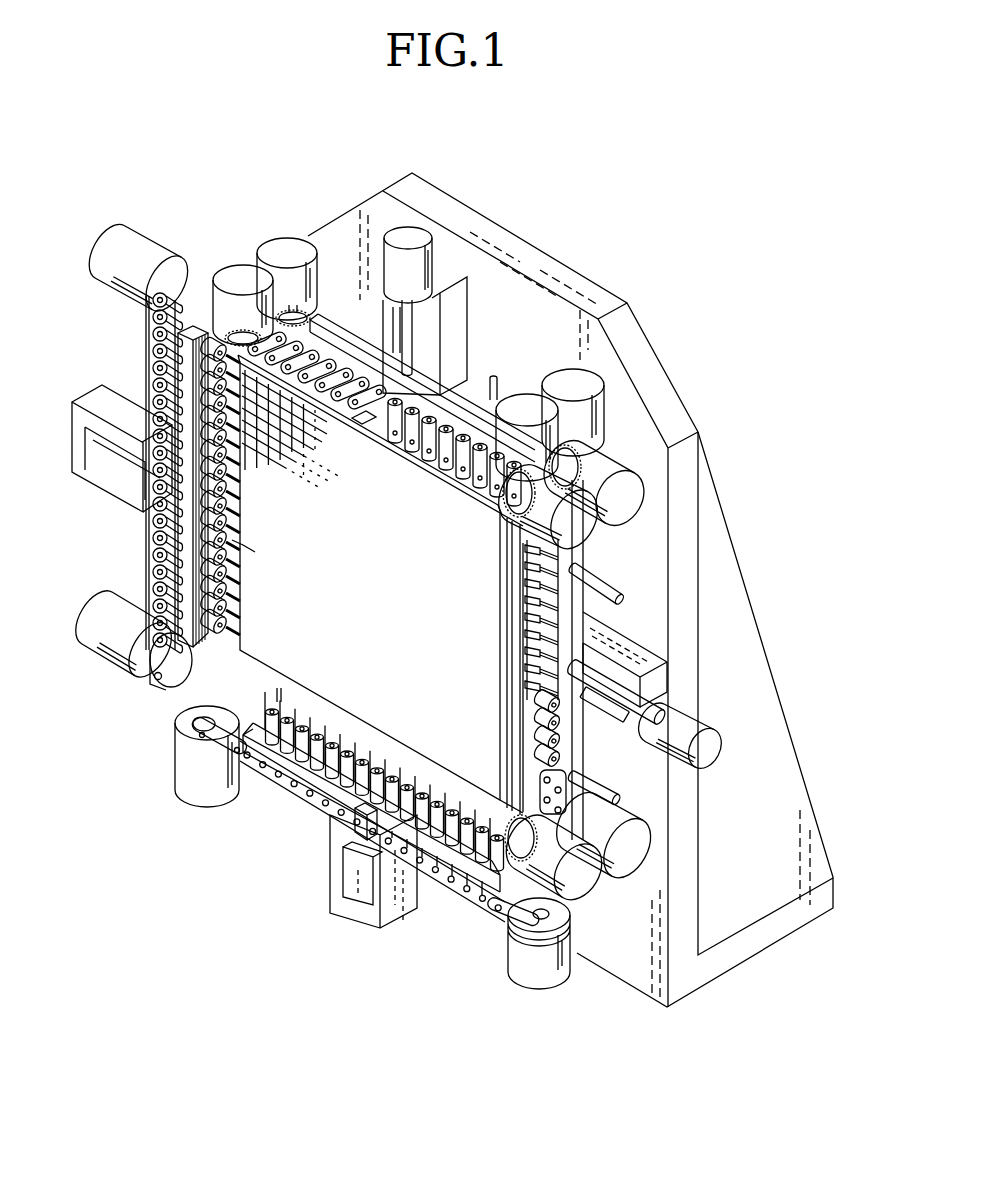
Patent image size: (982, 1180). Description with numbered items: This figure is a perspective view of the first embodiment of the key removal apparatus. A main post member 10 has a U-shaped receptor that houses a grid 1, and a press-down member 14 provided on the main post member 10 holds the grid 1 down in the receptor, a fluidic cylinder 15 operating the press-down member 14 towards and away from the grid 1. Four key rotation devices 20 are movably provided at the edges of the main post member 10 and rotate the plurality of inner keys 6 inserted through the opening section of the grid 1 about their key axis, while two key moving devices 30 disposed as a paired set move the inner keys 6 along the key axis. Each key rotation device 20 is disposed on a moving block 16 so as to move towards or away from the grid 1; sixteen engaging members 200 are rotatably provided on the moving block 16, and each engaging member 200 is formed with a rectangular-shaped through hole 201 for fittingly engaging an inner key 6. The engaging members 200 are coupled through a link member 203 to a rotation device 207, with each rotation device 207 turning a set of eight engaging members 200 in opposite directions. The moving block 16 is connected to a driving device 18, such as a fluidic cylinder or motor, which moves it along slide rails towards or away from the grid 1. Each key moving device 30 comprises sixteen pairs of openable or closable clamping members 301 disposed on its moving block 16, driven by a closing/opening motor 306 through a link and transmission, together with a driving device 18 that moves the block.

The grid 1 is at (273, 633).
The inner key 6 is at (595, 588).
The main post member 10 is at (750, 647).
The press-down member 14 is at (347, 333).
The fluidic cylinder 15 is at (410, 240).
The moving block 16 is at (192, 333).
The driving device 18 is at (100, 400).
The key rotation device 20 is at (138, 572).
The key moving device 30 is at (493, 530).
The engaging member 200 is at (227, 590).
The rectangular-shaped through hole 201 is at (243, 490).
The link member 203 is at (143, 353).
The rotation device 207 is at (120, 245).
The clamping member 301 is at (525, 667).
The closing/opening motor 306 is at (240, 275).